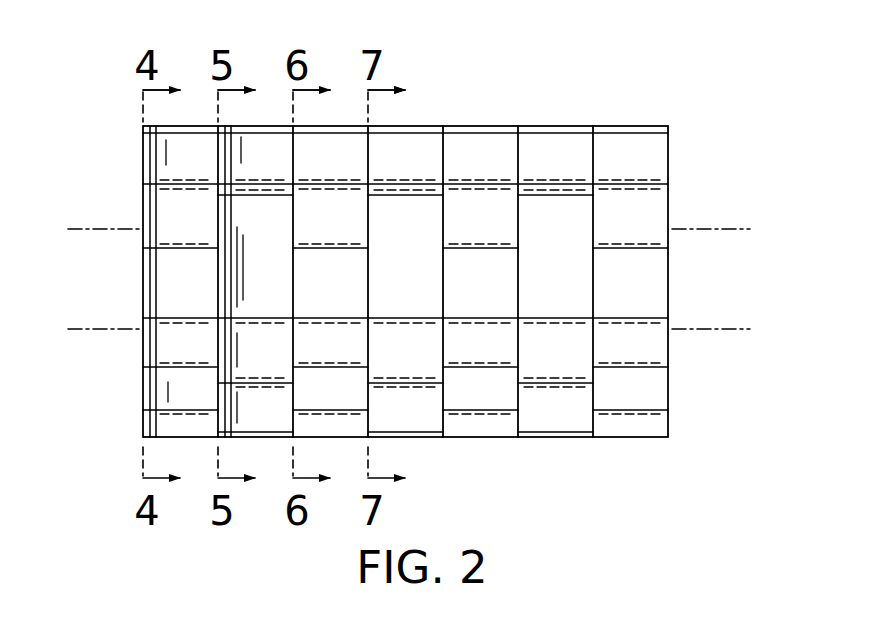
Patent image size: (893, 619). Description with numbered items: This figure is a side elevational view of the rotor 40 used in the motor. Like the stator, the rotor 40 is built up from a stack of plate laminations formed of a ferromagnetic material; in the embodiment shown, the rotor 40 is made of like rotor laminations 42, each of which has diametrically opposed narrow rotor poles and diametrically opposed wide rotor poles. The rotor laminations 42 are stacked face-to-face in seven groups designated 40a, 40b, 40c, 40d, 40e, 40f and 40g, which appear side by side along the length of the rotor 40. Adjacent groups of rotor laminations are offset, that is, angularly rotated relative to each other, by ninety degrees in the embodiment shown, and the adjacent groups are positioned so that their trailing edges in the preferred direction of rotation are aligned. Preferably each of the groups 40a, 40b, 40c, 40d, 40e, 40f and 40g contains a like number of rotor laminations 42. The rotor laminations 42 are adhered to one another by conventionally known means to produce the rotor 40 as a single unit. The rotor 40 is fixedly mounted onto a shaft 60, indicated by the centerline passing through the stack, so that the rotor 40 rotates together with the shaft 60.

The rotor 40 is at (408, 223).
The group of rotor laminations 40a is at (170, 170).
The group of rotor laminations 40b is at (263, 150).
The group of rotor laminations 40c is at (340, 143).
The group of rotor laminations 40d is at (413, 143).
The group of rotor laminations 40e is at (478, 152).
The group of rotor laminations 40f is at (560, 140).
The group of rotor laminations 40g is at (653, 142).
The rotor lamination 42 is at (145, 383).
The shaft 60 is at (720, 228).